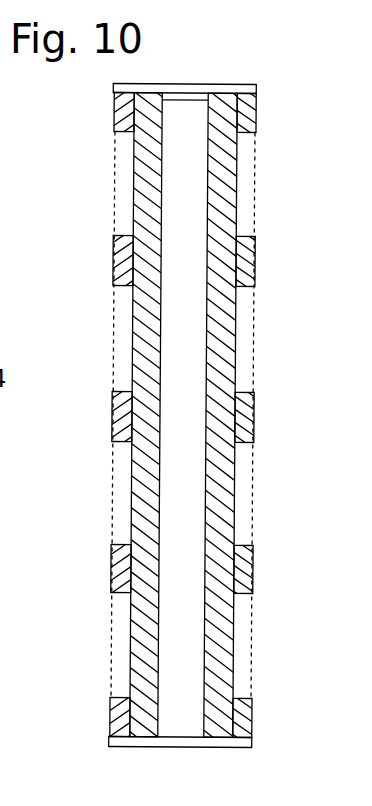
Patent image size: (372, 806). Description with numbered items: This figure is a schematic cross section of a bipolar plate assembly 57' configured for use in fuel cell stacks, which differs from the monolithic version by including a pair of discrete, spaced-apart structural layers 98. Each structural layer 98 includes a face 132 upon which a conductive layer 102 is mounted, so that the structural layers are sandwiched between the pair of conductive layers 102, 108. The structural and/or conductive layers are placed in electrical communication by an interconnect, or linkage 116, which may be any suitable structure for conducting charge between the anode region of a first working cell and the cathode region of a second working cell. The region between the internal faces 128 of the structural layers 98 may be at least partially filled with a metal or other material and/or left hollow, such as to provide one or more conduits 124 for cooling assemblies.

The bipolar plate assembly 57' is at (160, 414).
The structural layer 98 is at (170, 682).
The conductive layer 102 is at (104, 258).
The conductive layer 108 is at (265, 258).
The interconnect 116 is at (206, 84).
The conduit 124 is at (178, 501).
The internal face 128 is at (206, 598).
The face 132 is at (114, 718).